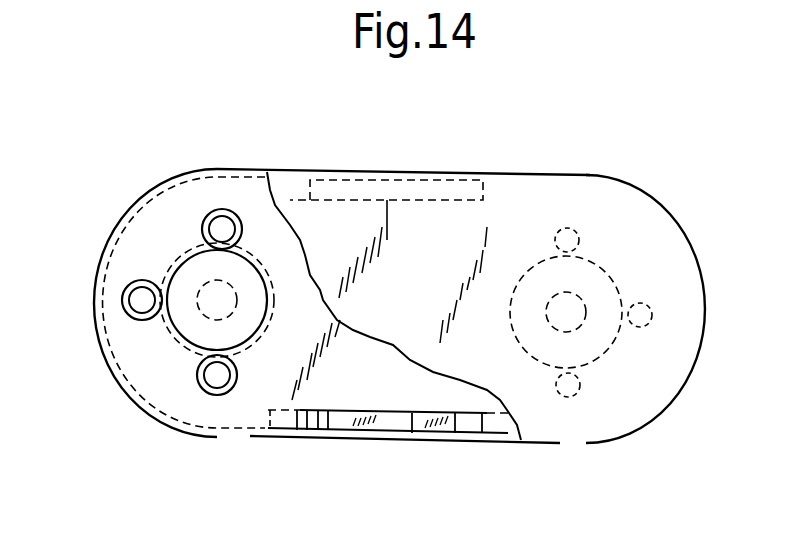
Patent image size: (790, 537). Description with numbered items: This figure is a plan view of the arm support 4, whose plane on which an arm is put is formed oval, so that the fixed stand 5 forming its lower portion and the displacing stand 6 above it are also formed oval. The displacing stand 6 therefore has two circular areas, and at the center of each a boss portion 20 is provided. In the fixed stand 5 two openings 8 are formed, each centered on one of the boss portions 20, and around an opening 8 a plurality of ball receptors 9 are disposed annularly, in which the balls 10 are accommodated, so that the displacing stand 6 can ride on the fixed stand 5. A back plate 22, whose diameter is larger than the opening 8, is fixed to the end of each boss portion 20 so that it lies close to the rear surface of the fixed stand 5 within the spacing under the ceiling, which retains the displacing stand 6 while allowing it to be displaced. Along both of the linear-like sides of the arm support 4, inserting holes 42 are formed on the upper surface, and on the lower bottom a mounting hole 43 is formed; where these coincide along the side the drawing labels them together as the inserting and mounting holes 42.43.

The arm support 4 is at (459, 156).
The fixed stand 5 is at (252, 192).
The displacing stand 6 is at (550, 188).
The opening 8 is at (173, 337).
The ball receptor 9 is at (207, 372).
The ball 10 is at (197, 392).
The boss portion 20 is at (578, 332).
The back plate 22 is at (626, 322).
The inserting hole 42 is at (412, 433).
The mounting hole 43 is at (293, 430).
The inserting hole and mounting hole 42.43 is at (318, 430).